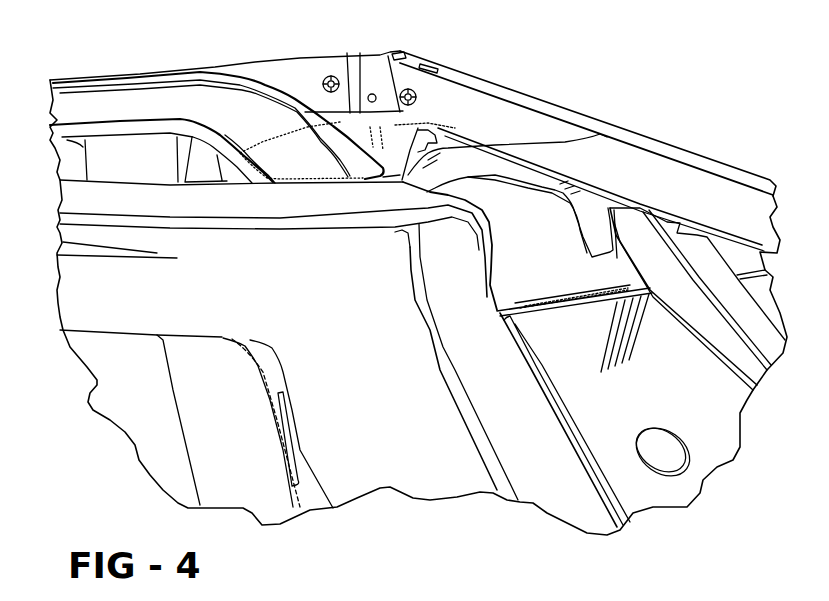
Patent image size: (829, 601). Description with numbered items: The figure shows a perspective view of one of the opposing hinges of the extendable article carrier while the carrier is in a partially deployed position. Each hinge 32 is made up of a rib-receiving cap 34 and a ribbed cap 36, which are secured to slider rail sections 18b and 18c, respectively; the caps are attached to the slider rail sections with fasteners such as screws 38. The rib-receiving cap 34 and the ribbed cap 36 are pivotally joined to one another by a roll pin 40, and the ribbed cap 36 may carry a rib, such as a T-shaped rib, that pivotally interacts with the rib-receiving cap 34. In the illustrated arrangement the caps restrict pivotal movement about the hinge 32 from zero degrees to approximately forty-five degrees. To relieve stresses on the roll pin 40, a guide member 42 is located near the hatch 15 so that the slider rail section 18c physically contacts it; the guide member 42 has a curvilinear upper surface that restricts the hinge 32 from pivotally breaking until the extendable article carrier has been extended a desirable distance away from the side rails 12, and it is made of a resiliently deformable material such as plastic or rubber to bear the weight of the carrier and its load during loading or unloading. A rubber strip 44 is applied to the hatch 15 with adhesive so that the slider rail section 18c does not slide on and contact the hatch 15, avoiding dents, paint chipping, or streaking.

The side rails 12 is at (72, 103).
The hatch 15 is at (578, 371).
The slider rail section 18b is at (258, 71).
The slider rail section 18c is at (557, 113).
The hinge 32 is at (410, 52).
The rib-receiving cap 34 is at (352, 60).
The ribbed cap 36 is at (380, 70).
The screws 38 is at (323, 79).
The roll pin 40 is at (372, 84).
The guide member 42 is at (592, 218).
The rubber strip 44 is at (590, 222).